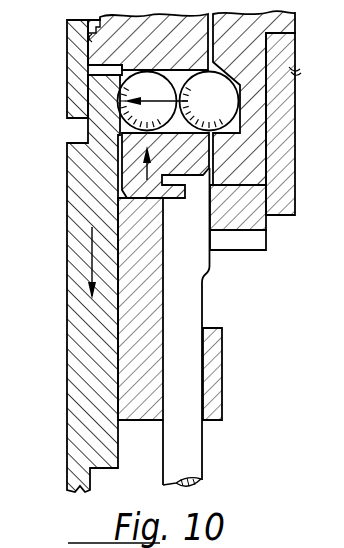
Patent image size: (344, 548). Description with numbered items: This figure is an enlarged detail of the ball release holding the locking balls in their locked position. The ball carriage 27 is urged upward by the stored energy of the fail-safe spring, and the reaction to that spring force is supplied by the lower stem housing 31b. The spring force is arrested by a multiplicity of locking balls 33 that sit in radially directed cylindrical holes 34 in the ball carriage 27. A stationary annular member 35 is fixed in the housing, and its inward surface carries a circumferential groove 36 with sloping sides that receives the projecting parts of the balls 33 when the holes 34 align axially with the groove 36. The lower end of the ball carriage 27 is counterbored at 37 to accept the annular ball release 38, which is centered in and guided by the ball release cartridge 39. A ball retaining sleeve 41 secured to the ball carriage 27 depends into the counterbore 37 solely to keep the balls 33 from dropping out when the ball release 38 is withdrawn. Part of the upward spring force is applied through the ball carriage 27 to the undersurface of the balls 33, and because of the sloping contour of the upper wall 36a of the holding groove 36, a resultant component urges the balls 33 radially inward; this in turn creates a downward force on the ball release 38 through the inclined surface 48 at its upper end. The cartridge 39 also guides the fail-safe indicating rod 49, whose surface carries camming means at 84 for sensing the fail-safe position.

The ball carriage 27 is at (118, 50).
The lower stem housing 31b is at (282, 198).
The locking balls 33 is at (88, 54).
The radially directed cylindrical holes 34 is at (172, 75).
The stationary annular member 35 is at (247, 165).
The circumferential groove 36 is at (222, 134).
The upper wall of the holding groove 36a is at (228, 66).
The counterbore 37 is at (112, 77).
The ball release 38 is at (85, 245).
The ball release cartridge 39 is at (147, 310).
The ball retaining sleeve 41 is at (82, 98).
The inclined surface 48 is at (117, 110).
The fail-safe indicating rod 49 is at (186, 444).
The camming means 84 is at (205, 273).